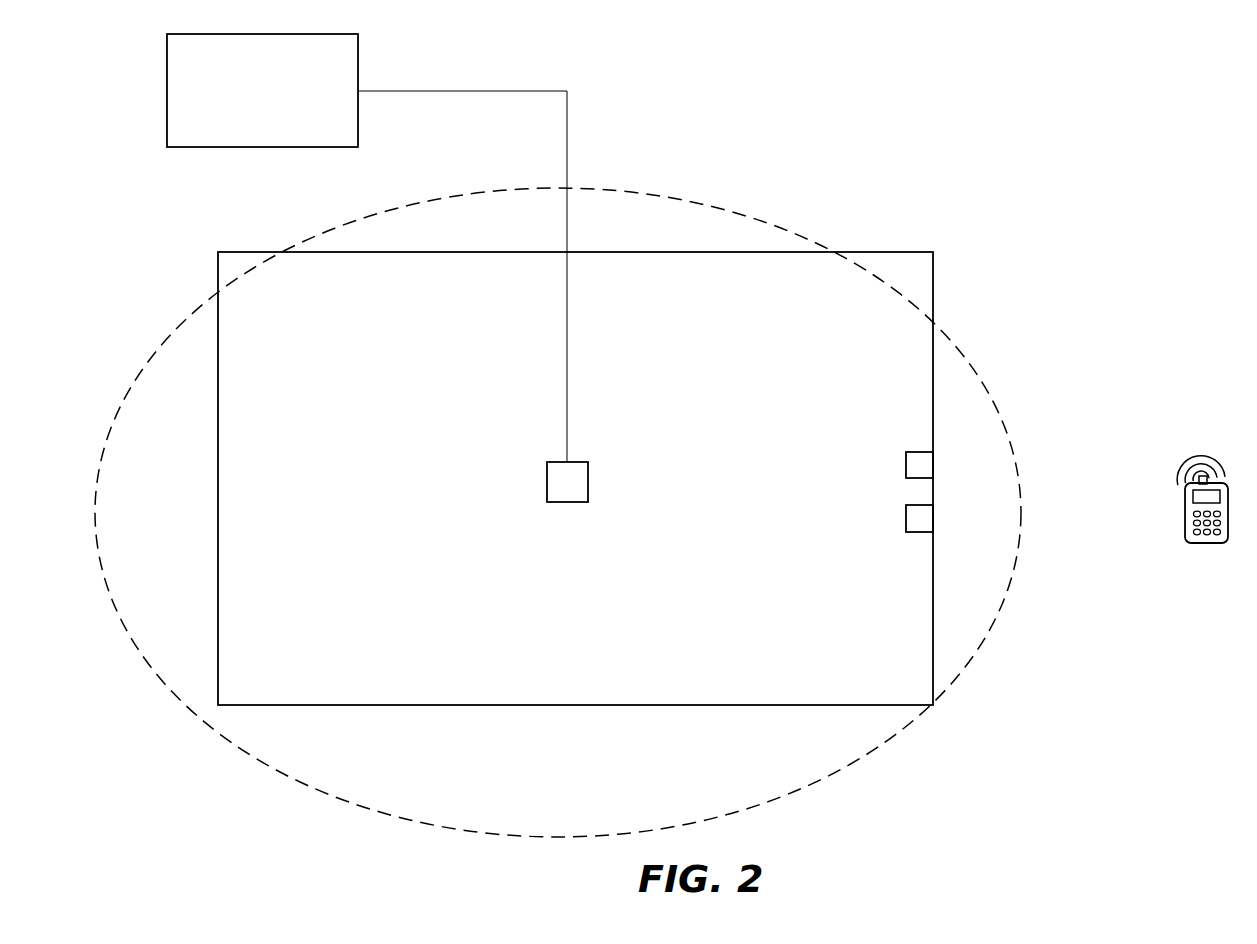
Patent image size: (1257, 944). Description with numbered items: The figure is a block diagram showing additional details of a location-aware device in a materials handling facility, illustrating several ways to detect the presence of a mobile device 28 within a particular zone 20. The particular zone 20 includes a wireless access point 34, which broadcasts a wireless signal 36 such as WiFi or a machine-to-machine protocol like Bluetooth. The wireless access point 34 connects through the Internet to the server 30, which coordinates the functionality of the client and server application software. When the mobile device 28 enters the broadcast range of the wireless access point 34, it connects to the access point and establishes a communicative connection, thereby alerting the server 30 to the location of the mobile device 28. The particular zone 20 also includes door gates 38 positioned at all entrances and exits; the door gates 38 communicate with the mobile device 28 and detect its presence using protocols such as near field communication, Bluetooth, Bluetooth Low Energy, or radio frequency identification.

The particular zone 20 is at (575, 478).
The mobile device 28 is at (1193, 458).
The server 30 is at (262, 90).
The wireless access point 34 is at (567, 478).
The wireless signal 36 is at (762, 225).
The door gates 38 is at (915, 460).